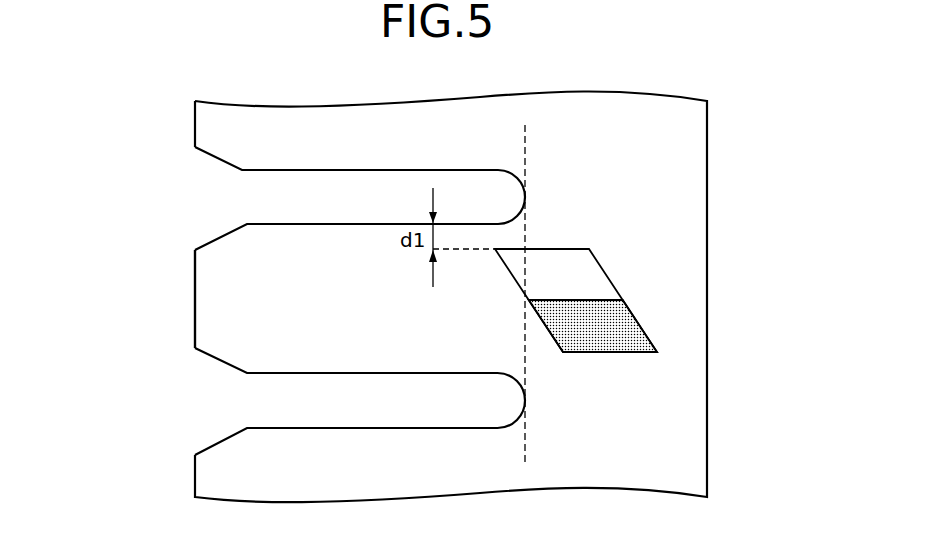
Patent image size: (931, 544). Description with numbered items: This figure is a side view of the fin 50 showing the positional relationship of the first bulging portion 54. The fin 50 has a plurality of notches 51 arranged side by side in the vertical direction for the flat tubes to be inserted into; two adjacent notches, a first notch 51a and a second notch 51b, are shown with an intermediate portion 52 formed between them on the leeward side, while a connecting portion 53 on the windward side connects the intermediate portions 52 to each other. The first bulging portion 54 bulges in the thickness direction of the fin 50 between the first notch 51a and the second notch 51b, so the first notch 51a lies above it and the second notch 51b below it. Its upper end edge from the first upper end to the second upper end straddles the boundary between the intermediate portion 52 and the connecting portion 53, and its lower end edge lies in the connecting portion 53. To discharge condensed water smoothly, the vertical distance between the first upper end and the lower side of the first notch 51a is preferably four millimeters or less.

The fin 50 is at (707, 248).
The notches 51 is at (313, 301).
The first notch 51a is at (258, 200).
The second notch 51b is at (258, 401).
The intermediate portion 52 is at (270, 298).
The connecting portion 53 is at (675, 351).
The first bulging portion 54 is at (567, 290).